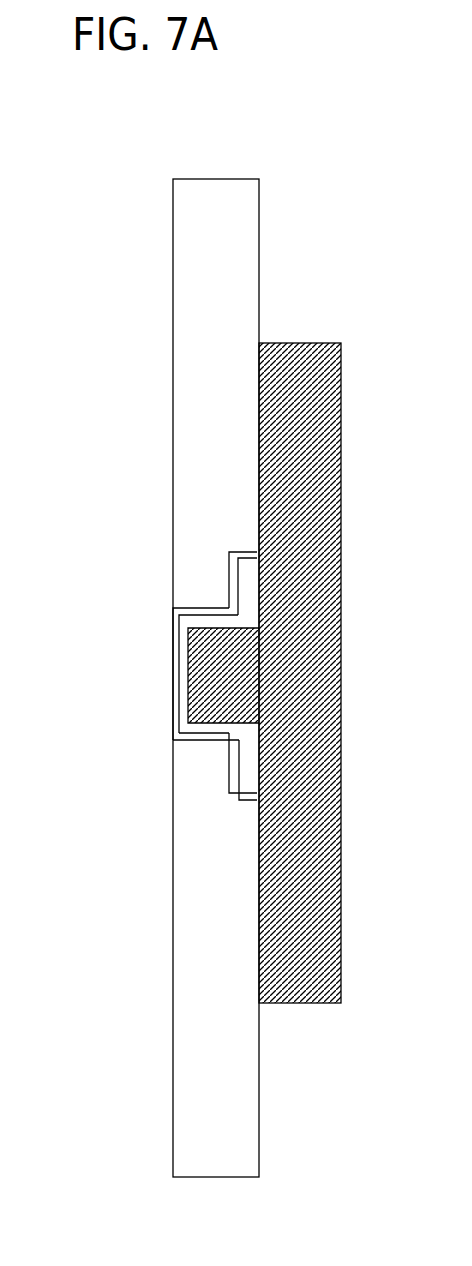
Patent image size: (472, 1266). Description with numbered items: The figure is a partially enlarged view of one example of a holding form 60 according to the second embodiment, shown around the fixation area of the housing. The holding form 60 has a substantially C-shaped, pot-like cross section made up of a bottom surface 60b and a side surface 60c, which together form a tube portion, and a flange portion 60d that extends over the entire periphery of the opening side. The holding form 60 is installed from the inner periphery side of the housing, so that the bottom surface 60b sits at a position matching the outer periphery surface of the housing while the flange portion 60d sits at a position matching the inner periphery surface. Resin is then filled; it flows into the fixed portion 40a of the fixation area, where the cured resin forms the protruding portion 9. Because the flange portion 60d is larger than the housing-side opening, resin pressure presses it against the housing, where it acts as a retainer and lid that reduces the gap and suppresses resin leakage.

The protruding portion 9 is at (228, 665).
The fixed portion 40a is at (227, 583).
The holding form 60 is at (176, 638).
The bottom surface 60b is at (178, 682).
The side surface 60c is at (193, 738).
The flange portion 60d is at (244, 766).